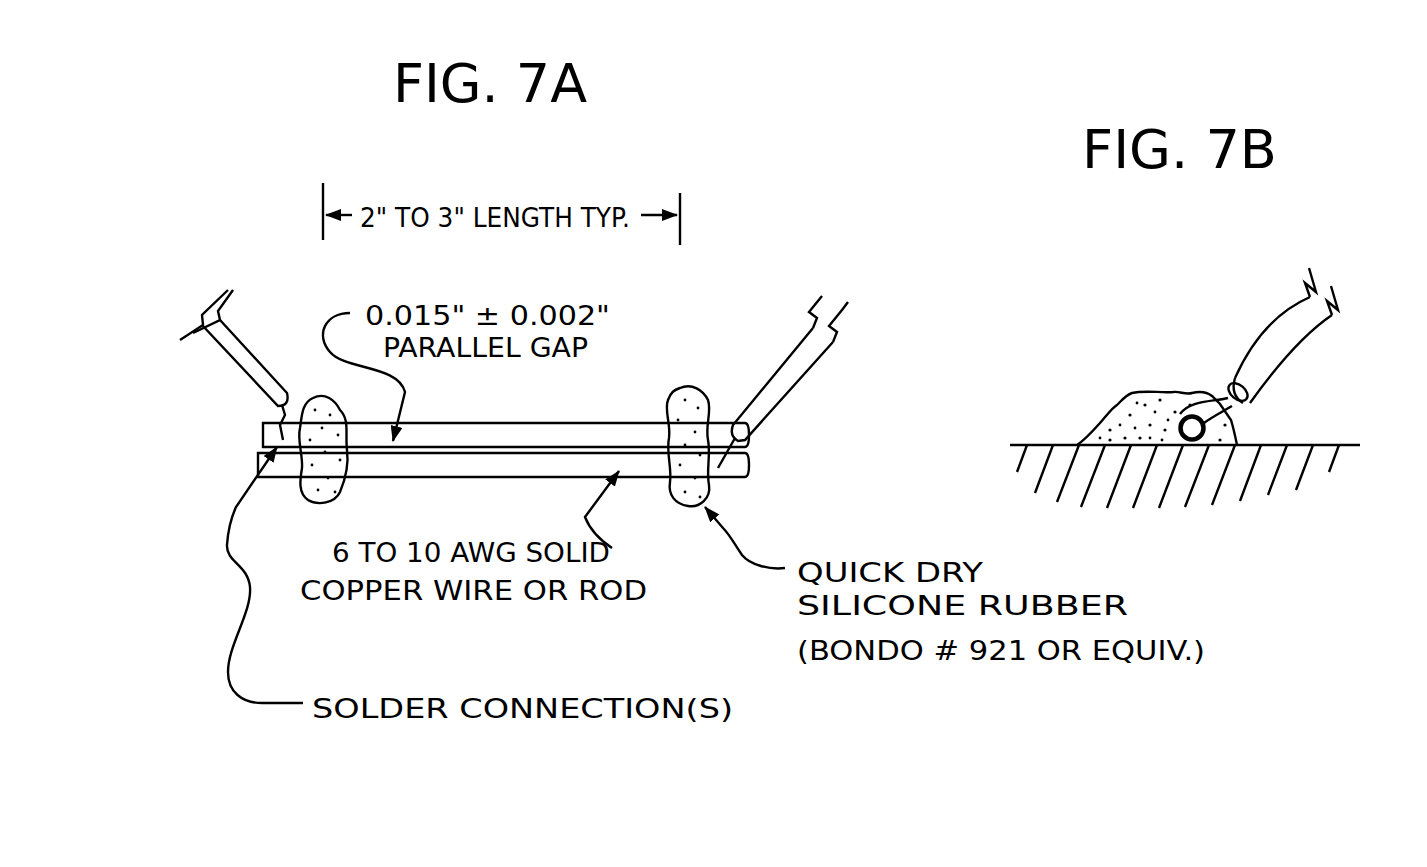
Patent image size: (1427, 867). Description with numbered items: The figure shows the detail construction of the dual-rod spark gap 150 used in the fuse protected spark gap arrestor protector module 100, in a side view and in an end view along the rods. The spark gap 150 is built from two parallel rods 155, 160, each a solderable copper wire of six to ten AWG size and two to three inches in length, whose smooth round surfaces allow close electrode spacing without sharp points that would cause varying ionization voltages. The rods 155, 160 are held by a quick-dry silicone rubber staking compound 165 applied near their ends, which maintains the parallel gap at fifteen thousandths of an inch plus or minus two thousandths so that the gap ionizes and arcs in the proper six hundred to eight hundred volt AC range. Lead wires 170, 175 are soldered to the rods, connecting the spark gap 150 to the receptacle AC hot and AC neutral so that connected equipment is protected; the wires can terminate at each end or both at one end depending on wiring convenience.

In FIG. 7B, the fuse protected spark gap arrestor protector module 100 is at (1030, 445).
In FIG. 7A, the spark gap 150 is at (780, 173).
In FIG. 7A, the rod 155 is at (505, 423).
In FIG. 7A, the rod 160 is at (417, 475).
In FIG. 7B, the rod 160 is at (1207, 427).
In FIG. 7A, the quick-dry silicone rubber staking compound 165 is at (706, 400).
In FIG. 7B, the quick-dry silicone rubber staking compound 165 is at (1133, 393).
In FIG. 7A, the wire 170 is at (247, 385).
In FIG. 7A, the wire 175 is at (778, 417).
In FIG. 7B, the wire 175 is at (1297, 318).